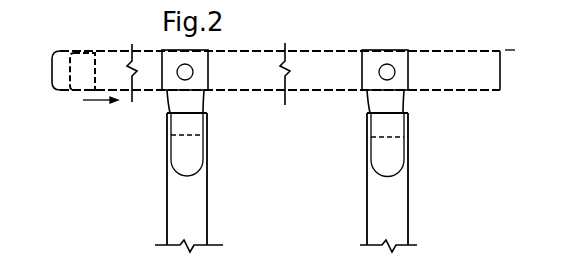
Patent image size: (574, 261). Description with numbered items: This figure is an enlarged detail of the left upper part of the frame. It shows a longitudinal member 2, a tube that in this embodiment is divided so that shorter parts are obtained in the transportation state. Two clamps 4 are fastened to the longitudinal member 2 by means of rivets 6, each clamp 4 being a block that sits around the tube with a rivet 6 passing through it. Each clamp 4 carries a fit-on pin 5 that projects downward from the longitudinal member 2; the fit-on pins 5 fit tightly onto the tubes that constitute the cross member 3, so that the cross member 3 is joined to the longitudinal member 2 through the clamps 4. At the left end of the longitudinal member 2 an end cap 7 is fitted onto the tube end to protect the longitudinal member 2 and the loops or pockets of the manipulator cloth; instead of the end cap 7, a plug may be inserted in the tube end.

The longitudinal member 2 is at (331, 66).
The cross member 3 is at (395, 185).
The clamp 4 is at (400, 62).
The fit-on pin 5 is at (397, 100).
The rivet 6 is at (383, 77).
The end cap 7 is at (57, 93).